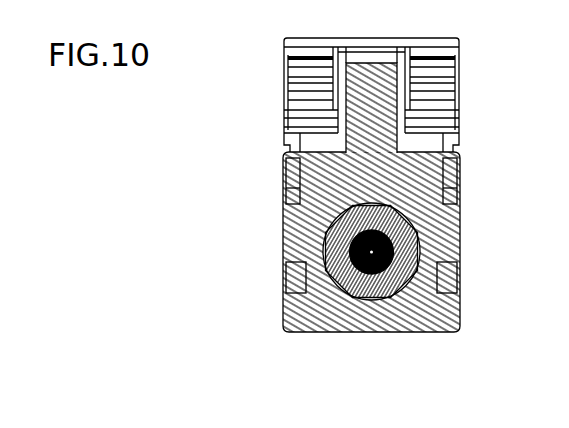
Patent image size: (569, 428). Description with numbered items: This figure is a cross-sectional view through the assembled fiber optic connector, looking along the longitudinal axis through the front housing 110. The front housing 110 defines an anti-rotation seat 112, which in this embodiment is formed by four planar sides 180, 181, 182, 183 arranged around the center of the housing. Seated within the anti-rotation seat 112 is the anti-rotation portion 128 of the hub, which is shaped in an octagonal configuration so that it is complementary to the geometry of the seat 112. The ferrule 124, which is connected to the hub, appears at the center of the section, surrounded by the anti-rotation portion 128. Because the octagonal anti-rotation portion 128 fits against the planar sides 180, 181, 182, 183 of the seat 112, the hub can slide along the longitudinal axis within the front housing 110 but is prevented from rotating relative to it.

The front housing 110 is at (292, 223).
The anti-rotation seat 112 is at (412, 190).
The ferrule 124 is at (362, 285).
The anti-rotation portion 128 is at (424, 233).
The planar side 180 is at (318, 256).
The planar side 181 is at (395, 300).
The planar side 182 is at (437, 253).
The planar side 183 is at (322, 193).